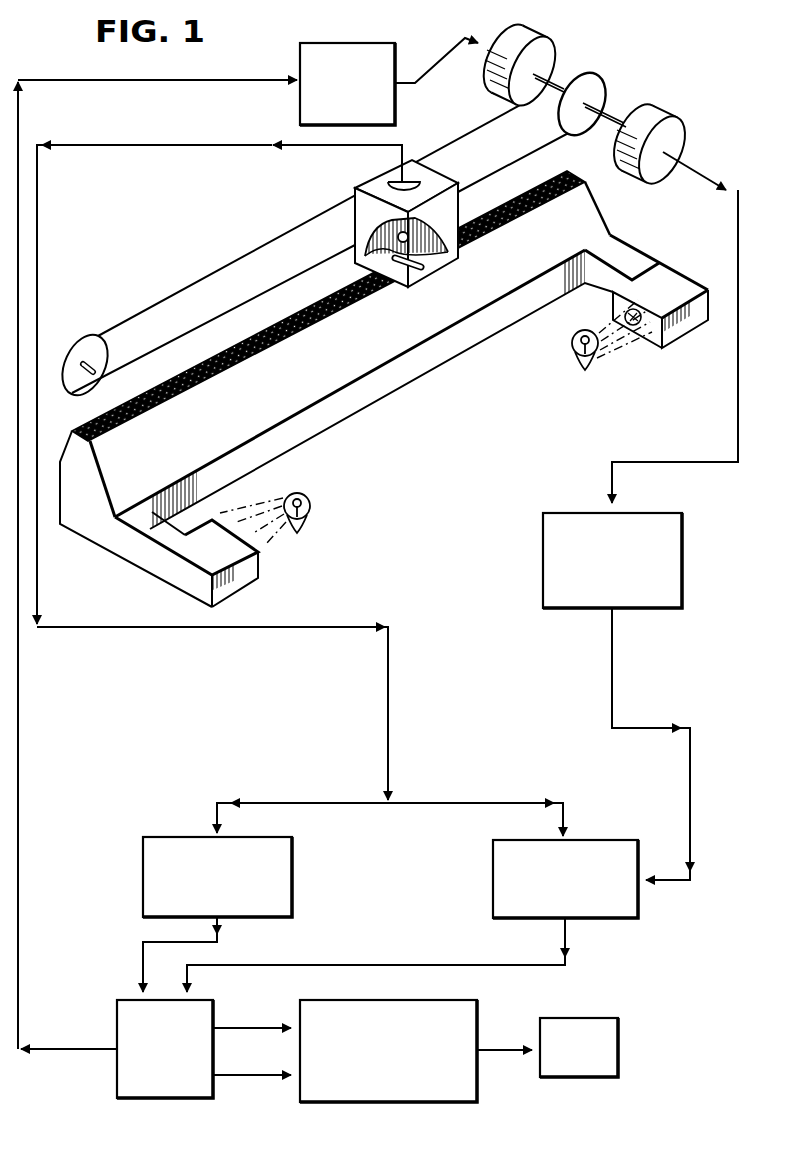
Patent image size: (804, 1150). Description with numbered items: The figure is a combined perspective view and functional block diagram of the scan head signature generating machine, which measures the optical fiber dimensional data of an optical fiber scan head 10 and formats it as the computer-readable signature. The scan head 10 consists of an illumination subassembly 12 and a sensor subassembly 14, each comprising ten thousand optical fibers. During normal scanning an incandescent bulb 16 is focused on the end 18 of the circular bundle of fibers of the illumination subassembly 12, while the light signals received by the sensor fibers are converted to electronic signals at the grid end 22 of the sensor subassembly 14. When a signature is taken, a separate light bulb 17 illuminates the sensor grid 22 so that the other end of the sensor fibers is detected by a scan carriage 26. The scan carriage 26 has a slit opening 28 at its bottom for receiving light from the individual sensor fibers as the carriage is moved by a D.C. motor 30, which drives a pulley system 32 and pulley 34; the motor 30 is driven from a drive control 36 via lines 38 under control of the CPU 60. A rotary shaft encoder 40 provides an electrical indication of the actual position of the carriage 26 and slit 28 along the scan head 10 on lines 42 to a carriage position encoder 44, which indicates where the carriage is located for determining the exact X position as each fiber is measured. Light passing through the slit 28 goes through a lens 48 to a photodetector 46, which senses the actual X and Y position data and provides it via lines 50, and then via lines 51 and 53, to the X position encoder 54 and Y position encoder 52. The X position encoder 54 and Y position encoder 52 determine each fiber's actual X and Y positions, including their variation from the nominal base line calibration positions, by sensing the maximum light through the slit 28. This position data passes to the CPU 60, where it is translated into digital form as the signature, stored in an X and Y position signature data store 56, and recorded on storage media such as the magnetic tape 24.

The optical fiber scan head 10 is at (74, 480).
The illumination subassembly 12 is at (89, 425).
The sensor subassembly 14 is at (112, 432).
The incandescent bulb 16 is at (567, 352).
The light bulb 17 is at (312, 507).
The end of the circular bundle of fibers 18 is at (653, 335).
The grid end of the sensing fibers 22 is at (265, 560).
The magnetic tape 24 is at (593, 1018).
The scan carriage 26 is at (365, 180).
The slit opening 28 is at (414, 272).
The D.C. motor 30 is at (527, 35).
The pulley system 32 is at (592, 76).
The pulley 34 is at (465, 137).
The drive control 36 is at (358, 43).
The lines 38 is at (440, 60).
The rotary shaft encoder 40 is at (654, 123).
The lines 42 is at (737, 396).
The carriage position encoder 44 is at (543, 560).
The photodetector 46 is at (410, 182).
The lens 48 is at (372, 232).
The lines 50 is at (197, 145).
The lines 51 is at (322, 803).
The Y position encoder 52 is at (292, 866).
The lines 53 is at (470, 803).
The X position encoder 54 is at (493, 868).
The X and Y position signature data store 56 is at (383, 1103).
The CPU 60 is at (142, 1098).